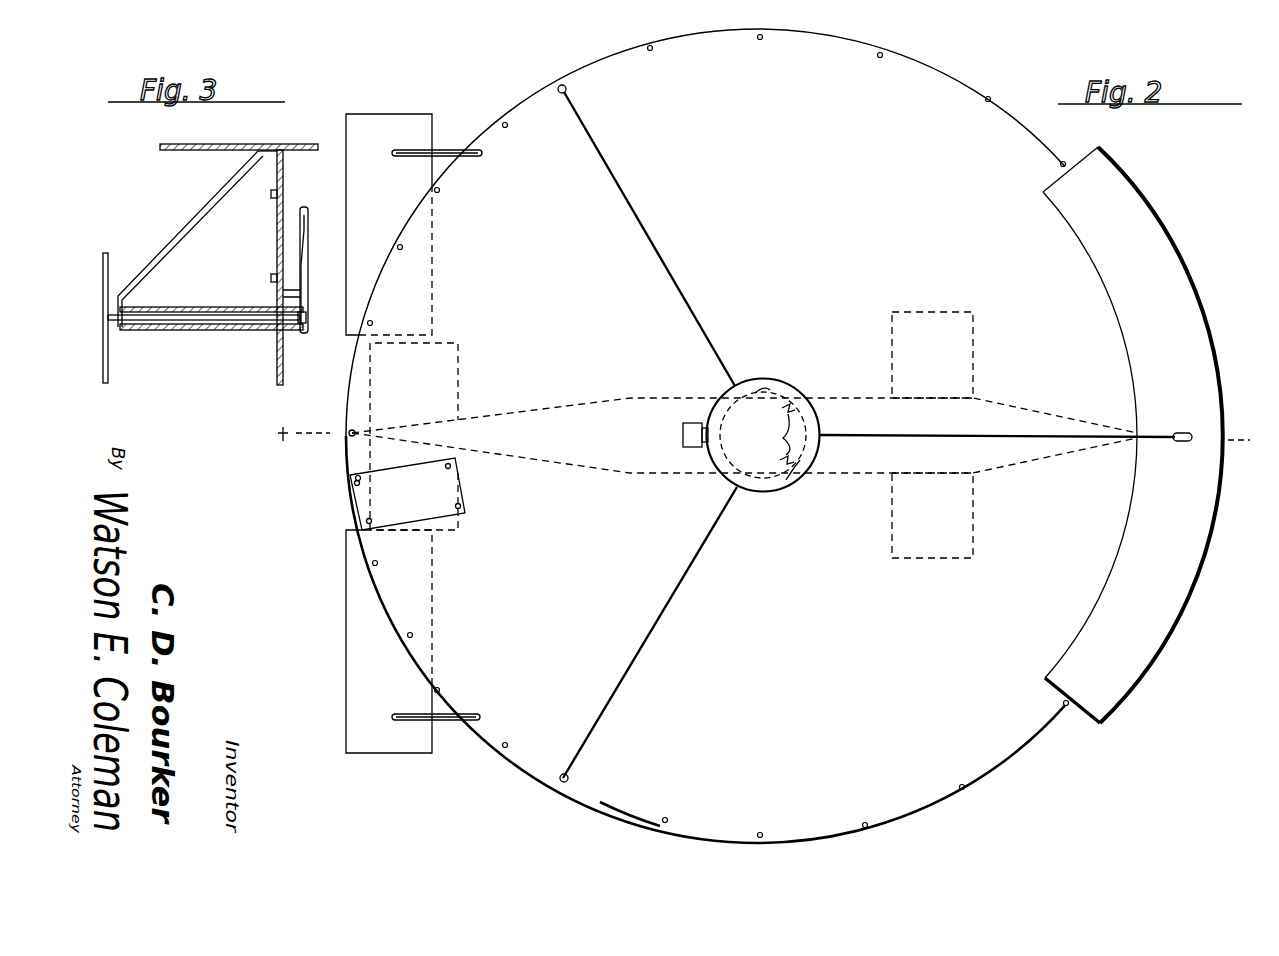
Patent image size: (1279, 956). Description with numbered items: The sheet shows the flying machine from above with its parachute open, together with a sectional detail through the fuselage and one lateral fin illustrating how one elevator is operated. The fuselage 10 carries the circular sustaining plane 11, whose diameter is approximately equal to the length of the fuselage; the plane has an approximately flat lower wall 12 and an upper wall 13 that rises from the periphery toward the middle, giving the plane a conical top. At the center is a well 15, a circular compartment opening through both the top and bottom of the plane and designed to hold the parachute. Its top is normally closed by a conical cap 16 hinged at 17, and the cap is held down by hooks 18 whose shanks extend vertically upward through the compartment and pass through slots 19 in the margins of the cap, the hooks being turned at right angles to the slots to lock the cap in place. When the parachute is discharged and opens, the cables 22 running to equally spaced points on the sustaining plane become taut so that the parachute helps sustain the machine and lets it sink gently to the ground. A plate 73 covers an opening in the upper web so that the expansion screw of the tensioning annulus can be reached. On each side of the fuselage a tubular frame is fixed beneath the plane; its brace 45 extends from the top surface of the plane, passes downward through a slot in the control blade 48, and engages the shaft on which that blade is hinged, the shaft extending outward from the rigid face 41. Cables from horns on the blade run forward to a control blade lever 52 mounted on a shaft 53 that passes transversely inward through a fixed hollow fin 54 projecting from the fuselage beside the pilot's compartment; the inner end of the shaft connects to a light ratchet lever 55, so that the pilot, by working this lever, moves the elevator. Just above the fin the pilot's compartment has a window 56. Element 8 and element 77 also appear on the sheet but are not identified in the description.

In FIG. 2, the section line 8 is at (761, 437).
In FIG. 2, the fuselage 10 is at (641, 396).
In FIG. 3, the fuselage 10 is at (277, 380).
In FIG. 2, the sustaining plane 11 is at (937, 108).
In FIG. 3, the lower wall 12 is at (180, 152).
In FIG. 2, the upper wall 13 is at (612, 805).
In FIG. 2, the well 15 is at (766, 385).
In FIG. 2, the cap 16 is at (755, 492).
In FIG. 2, the hinge 17 is at (692, 447).
In FIG. 2, the hooks 18 is at (778, 434).
In FIG. 2, the slots 19 is at (790, 482).
In FIG. 2, the cables 22 is at (688, 300).
In FIG. 2, the rigid face 41 is at (462, 360).
In FIG. 2, the brace 45 is at (420, 150).
In FIG. 2, the control blade 48 is at (388, 114).
In FIG. 3, the control blade lever 52 is at (103, 296).
In FIG. 3, the shaft 53 is at (170, 320).
In FIG. 2, the hollow fin 54 is at (942, 312).
In FIG. 3, the hollow fin 54 is at (225, 307).
In FIG. 3, the ratchet lever 55 is at (308, 256).
In FIG. 3, the window 56 is at (277, 238).
In FIG. 2, the plate 73 is at (466, 492).
In FIG. 2, the arcuate plate 77 is at (1190, 304).